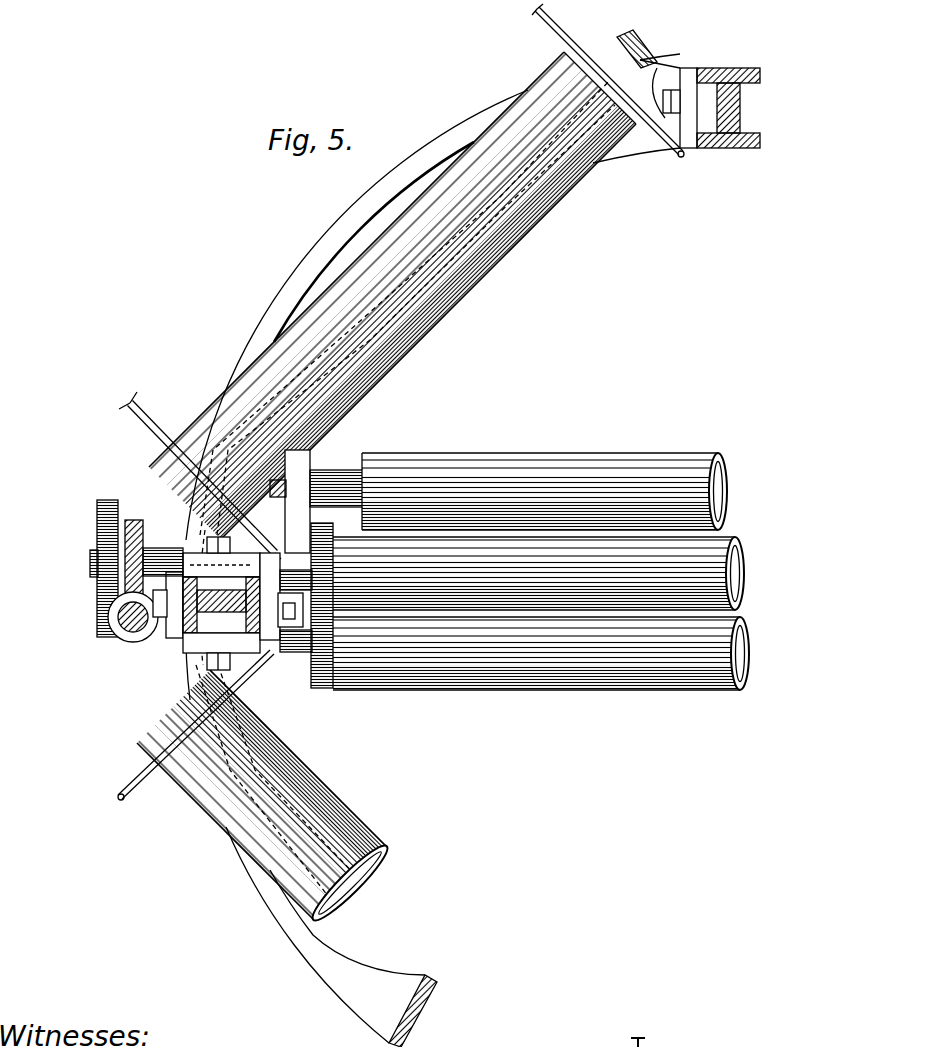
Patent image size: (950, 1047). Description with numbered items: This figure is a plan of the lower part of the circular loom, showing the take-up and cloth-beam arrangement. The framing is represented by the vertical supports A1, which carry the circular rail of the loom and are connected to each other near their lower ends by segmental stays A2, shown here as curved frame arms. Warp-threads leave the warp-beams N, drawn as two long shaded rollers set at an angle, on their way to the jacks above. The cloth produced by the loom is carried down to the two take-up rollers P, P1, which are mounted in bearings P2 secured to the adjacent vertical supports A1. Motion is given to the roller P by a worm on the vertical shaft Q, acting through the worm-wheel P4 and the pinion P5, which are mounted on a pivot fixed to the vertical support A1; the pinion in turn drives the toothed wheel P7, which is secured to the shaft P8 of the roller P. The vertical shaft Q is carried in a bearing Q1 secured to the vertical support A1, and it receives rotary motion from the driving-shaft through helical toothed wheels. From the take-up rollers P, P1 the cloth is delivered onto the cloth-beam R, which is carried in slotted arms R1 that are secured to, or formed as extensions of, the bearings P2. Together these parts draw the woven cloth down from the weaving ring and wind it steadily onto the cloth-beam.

The vertical supports A1 is at (733, 58).
The segmental stays A2 is at (362, 985).
The warp-beams N is at (386, 489).
The take-up roller P is at (538, 573).
The take-up roller P1 is at (541, 653).
The bearings P2 is at (293, 571).
The worm-wheel P4 is at (137, 524).
The pinion P5 is at (103, 571).
The toothed wheel P7 is at (107, 502).
The shaft P8 is at (107, 570).
The vertical shaft Q is at (132, 636).
The bearing Q1 is at (113, 627).
The cloth-beam R is at (518, 491).
The slotted arms R1 is at (290, 501).